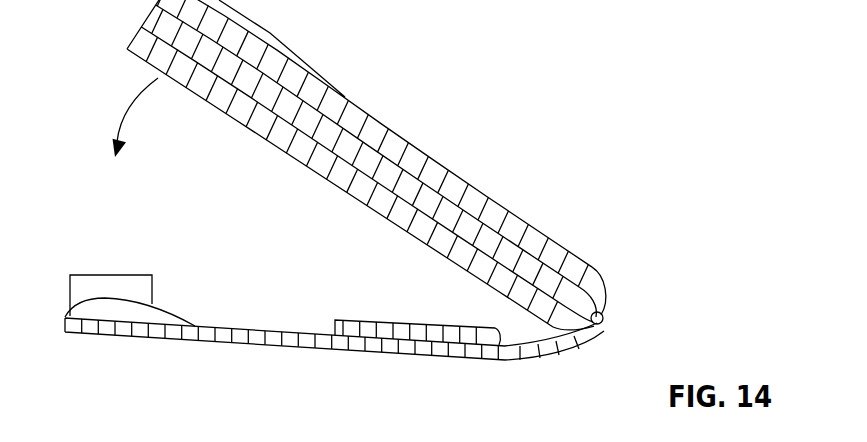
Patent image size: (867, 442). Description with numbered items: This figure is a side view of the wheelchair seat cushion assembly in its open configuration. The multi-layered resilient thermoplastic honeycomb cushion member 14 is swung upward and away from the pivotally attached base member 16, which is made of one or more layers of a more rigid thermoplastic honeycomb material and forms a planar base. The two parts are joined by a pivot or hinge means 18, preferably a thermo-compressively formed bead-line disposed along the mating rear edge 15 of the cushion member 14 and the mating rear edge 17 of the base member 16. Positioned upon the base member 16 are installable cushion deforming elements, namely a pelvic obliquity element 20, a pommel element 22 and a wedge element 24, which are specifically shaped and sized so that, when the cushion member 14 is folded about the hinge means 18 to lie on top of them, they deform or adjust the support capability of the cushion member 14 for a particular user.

The cushion member 14 is at (388, 106).
The rear edge of the cushion member 15 is at (600, 305).
The base member 16 is at (260, 345).
The rear edge of the base member 17 is at (600, 332).
The pivot or hinge means 18 is at (605, 315).
The pelvic obliquity element 20 is at (421, 323).
The pommel element 22 is at (163, 310).
The wedge element 24 is at (98, 275).